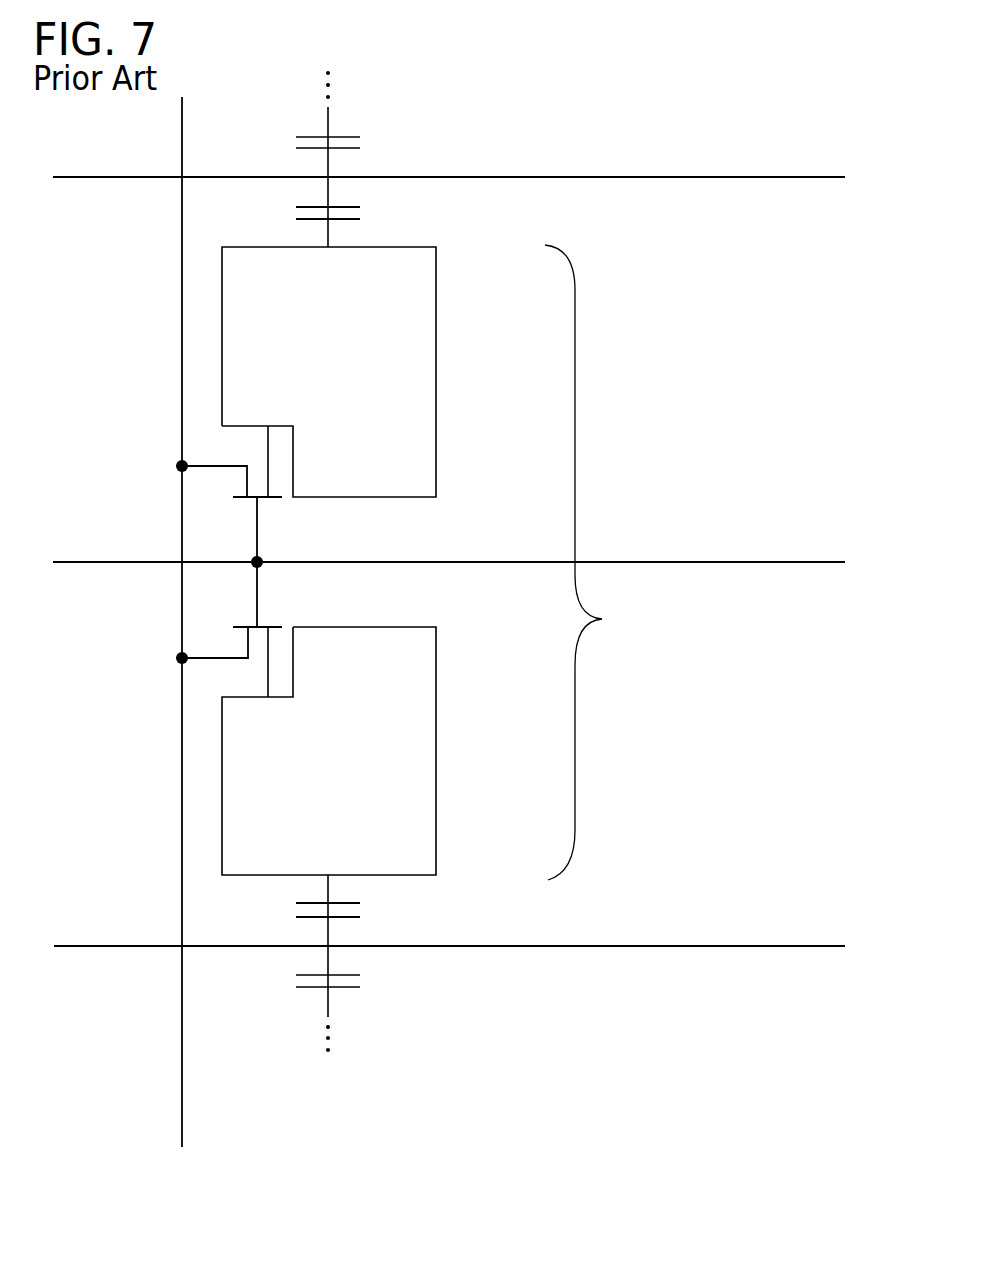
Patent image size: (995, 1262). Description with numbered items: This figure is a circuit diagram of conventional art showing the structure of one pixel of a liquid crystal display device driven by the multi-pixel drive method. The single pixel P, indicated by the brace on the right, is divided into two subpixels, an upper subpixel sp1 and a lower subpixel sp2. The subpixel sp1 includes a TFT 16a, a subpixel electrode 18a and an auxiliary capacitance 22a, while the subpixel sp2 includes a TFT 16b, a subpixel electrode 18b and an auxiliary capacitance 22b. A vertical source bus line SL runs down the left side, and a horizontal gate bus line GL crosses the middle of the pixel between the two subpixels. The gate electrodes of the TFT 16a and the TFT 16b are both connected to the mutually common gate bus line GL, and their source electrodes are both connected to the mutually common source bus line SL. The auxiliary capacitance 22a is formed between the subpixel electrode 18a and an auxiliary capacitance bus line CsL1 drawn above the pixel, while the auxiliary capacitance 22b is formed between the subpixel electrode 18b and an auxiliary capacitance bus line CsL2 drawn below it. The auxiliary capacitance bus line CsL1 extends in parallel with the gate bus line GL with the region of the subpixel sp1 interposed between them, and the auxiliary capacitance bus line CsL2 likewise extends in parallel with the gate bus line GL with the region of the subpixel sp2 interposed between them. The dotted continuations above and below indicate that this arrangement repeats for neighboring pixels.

The source bus line SL is at (188, 140).
The gate bus line GL is at (80, 562).
The auxiliary capacitance bus line CsL1 is at (80, 177).
The auxiliary capacitance bus line CsL2 is at (80, 946).
The auxiliary capacitance 22a is at (360, 219).
The auxiliary capacitance 22b is at (360, 917).
The subpixel electrode 18a is at (253, 347).
The subpixel electrode 18b is at (253, 757).
The TFT 16a is at (210, 446).
The TFT 16b is at (208, 610).
The subpixel sp1 is at (321, 407).
The subpixel sp2 is at (319, 718).
The pixel P is at (585, 562).